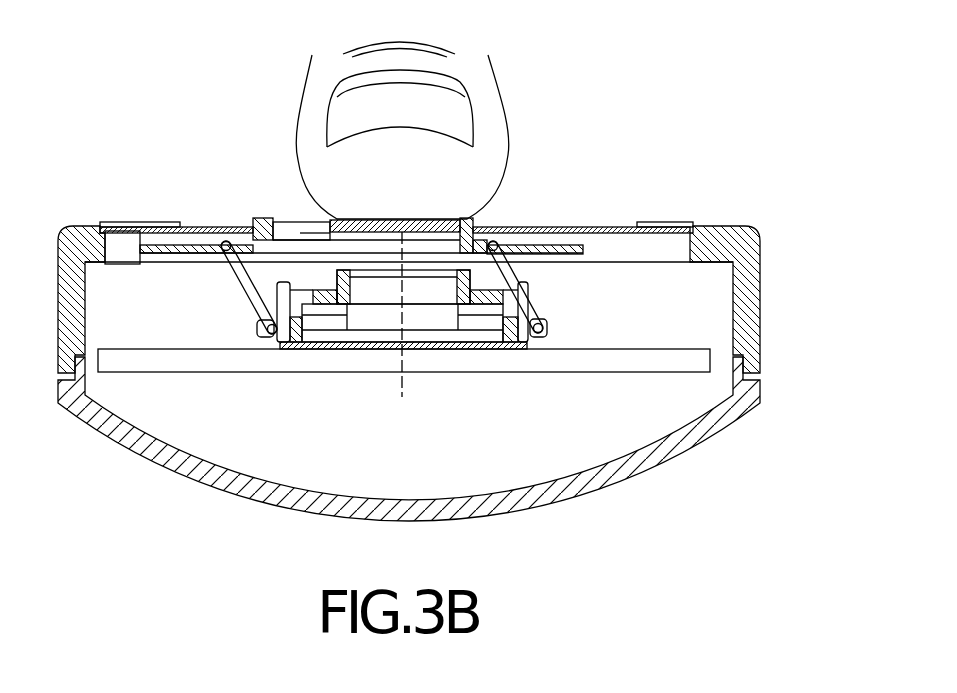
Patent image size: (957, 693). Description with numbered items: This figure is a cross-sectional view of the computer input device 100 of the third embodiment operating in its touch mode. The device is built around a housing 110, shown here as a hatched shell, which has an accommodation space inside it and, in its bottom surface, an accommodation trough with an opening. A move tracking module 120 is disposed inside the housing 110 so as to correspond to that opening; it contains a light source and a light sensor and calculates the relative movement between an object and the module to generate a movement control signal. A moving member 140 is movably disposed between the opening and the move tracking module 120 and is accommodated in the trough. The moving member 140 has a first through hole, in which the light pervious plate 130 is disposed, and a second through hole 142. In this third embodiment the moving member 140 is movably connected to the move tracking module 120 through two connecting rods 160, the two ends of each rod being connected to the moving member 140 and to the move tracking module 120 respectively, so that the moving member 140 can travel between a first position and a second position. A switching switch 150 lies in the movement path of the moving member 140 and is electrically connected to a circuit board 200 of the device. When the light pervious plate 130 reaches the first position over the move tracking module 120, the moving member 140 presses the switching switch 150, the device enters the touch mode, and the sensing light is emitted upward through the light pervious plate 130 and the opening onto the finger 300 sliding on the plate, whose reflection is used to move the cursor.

The computer input device 100 is at (158, 93).
The housing 110 is at (170, 463).
The move tracking module 120 is at (486, 280).
The light pervious plate 130 is at (477, 220).
The moving member 140 is at (167, 240).
The second through hole 142 is at (288, 219).
The switching switch 150 is at (118, 231).
The connecting rods 160 is at (247, 292).
The circuit board 200 is at (243, 358).
The finger 300 is at (488, 95).